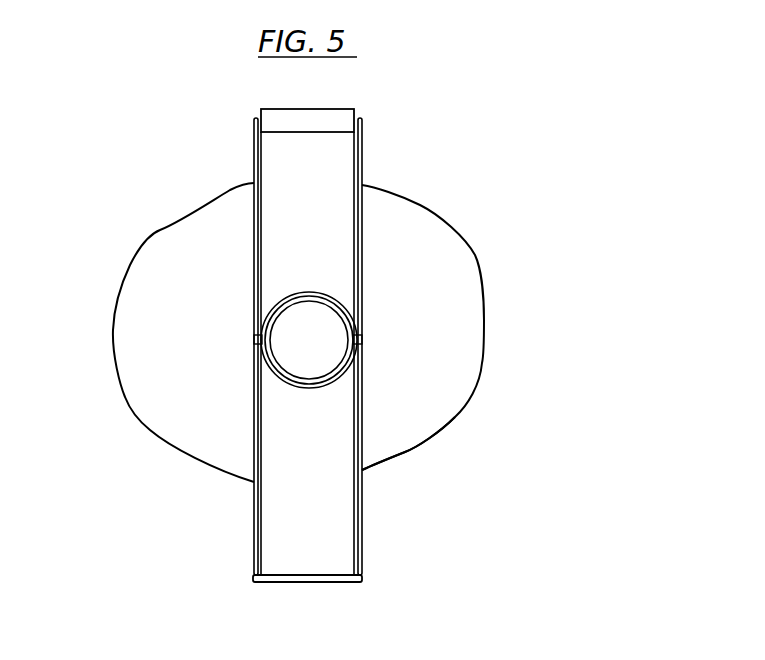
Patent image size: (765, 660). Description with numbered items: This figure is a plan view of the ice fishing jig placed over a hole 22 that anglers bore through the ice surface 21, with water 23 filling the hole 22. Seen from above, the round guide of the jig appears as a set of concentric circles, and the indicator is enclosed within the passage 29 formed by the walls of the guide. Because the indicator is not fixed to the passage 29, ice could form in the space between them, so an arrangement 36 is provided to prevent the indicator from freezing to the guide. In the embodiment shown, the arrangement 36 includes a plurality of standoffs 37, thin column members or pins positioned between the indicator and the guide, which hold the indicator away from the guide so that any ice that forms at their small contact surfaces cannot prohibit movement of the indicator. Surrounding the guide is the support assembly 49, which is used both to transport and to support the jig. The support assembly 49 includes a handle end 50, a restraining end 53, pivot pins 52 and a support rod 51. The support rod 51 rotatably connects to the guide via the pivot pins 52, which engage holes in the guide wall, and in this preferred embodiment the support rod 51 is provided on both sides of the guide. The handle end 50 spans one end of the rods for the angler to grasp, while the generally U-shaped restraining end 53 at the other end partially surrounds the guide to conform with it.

The ice surface 21 is at (467, 442).
The hole 22 is at (405, 452).
The water 23 is at (457, 353).
The passage 29 is at (293, 378).
The arrangement 36 is at (348, 310).
The standoffs 37 is at (266, 362).
The support assembly 49 is at (398, 168).
The handle end 50 is at (333, 109).
The support rod 51 is at (254, 166).
The pivot pins 52 is at (257, 342).
The restraining end 53 is at (283, 582).